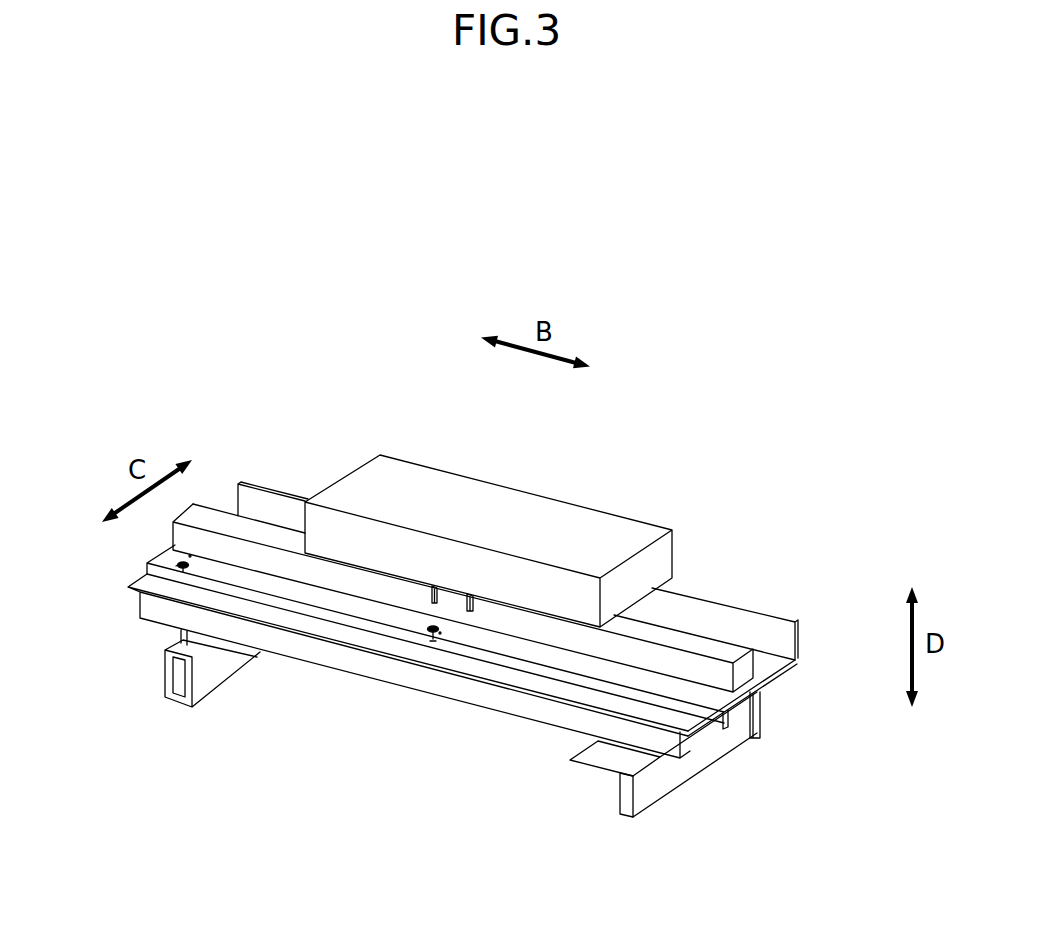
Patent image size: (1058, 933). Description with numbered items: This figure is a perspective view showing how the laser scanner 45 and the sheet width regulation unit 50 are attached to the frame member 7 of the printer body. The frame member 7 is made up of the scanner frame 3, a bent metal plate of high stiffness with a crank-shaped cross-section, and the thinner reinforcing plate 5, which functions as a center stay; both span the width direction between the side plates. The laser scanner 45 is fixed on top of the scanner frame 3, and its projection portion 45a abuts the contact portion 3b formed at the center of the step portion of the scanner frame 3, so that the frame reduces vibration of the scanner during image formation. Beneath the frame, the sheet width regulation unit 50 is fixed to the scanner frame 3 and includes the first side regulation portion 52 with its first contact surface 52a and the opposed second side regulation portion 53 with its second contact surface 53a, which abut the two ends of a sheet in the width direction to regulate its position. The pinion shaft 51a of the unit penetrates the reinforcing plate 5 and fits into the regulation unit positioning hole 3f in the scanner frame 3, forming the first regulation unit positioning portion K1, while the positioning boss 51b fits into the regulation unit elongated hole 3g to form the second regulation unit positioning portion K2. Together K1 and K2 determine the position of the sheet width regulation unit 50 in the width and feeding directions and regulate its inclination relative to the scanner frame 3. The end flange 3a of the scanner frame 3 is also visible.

The scanner frame 3 is at (698, 632).
The rail end flange 3a is at (745, 730).
The contact portion 3b is at (436, 588).
The regulation unit positioning hole 3f is at (432, 642).
The regulation unit elongated hole 3g is at (178, 565).
The reinforcing plate 5 is at (775, 638).
The frame member 7 is at (495, 571).
The laser scanner 45 is at (586, 525).
The projection portion 45a is at (468, 607).
The sheet width regulation unit 50 is at (122, 615).
The pinion shaft 51a is at (432, 638).
The positioning boss 51b is at (182, 562).
The first side regulation portion 52 is at (183, 650).
The first contact surface 52a is at (192, 677).
The second side regulation portion 53 is at (646, 795).
The second contact surface 53a is at (618, 786).
The first regulation unit positioning portion K1 is at (455, 640).
The second regulation unit positioning portion K2 is at (196, 551).